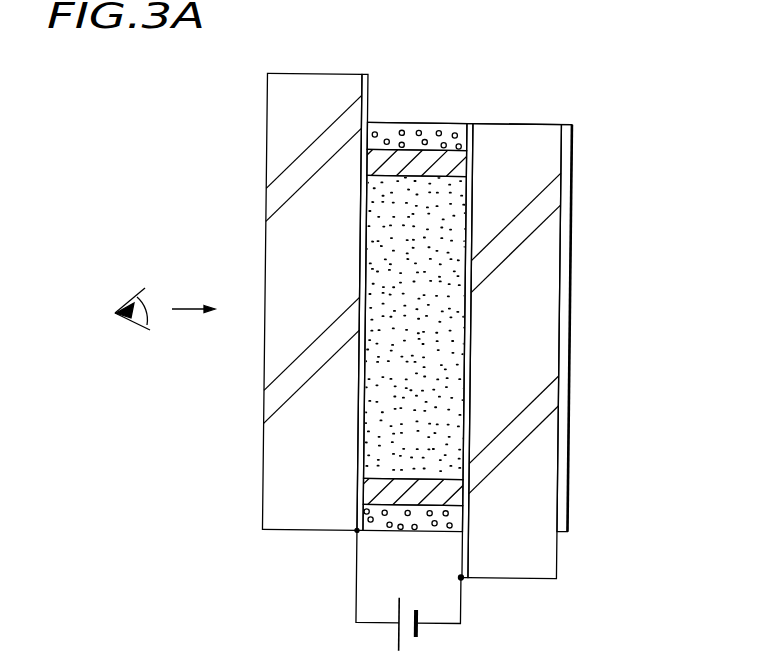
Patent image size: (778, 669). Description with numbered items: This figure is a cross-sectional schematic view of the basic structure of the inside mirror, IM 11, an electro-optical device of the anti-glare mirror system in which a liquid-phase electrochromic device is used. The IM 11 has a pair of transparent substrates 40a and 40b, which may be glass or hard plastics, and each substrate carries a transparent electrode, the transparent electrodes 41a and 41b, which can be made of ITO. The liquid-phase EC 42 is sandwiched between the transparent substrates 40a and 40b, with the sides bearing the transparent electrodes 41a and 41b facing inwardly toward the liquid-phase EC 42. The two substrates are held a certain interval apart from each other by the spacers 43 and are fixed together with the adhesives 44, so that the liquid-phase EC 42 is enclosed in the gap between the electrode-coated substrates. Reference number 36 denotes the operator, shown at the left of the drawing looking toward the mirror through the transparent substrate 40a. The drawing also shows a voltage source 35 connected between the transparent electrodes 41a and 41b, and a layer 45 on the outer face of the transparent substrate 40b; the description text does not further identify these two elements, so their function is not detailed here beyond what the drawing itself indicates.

The inside mirror (IM) 11 is at (422, 55).
The voltage source 35 is at (420, 638).
The operator 36 is at (126, 338).
The transparent substrate 40a is at (283, 145).
The transparent substrate 40b is at (533, 153).
The transparent electrode 41a is at (365, 93).
The transparent electrode 41b is at (470, 123).
The liquid-phase EC 42 is at (438, 252).
The spacers 43 is at (462, 160).
The adhesives 44 is at (433, 125).
The reflector layer 45 is at (570, 362).